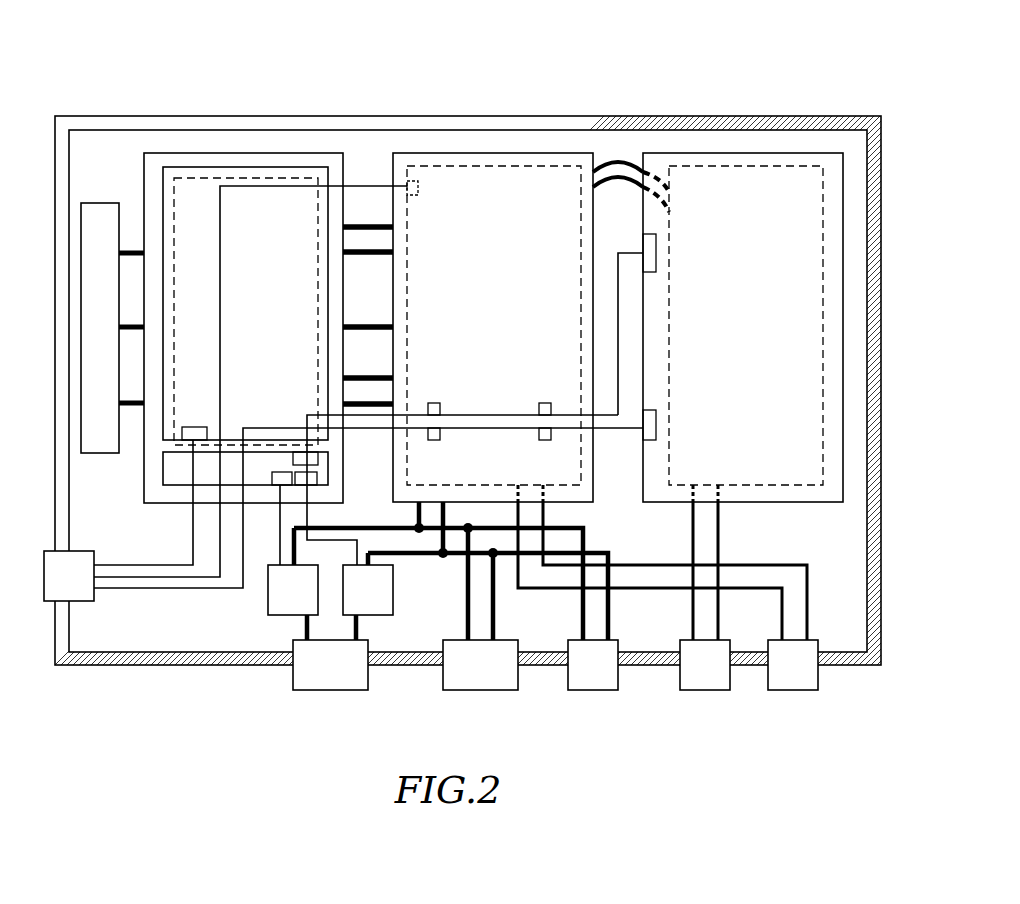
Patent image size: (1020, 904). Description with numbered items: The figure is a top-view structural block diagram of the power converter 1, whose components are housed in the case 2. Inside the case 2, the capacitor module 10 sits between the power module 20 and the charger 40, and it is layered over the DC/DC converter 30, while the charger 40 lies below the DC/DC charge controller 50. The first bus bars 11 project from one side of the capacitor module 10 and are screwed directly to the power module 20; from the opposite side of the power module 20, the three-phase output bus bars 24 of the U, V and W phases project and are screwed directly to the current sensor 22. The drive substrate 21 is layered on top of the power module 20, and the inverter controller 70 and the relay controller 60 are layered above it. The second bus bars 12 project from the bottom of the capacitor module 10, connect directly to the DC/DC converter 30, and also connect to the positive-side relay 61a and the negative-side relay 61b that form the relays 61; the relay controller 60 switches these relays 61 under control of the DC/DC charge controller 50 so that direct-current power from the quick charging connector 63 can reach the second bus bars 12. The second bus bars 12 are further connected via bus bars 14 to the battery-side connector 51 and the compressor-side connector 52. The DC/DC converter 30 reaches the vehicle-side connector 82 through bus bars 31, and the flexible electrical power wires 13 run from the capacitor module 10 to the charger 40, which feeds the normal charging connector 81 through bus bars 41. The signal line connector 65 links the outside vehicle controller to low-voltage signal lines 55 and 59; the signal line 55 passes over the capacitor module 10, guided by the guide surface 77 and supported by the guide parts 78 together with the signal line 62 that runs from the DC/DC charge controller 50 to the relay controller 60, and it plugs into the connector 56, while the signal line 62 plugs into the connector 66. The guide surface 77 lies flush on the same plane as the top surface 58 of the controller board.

The power converter 1 is at (768, 88).
The case 2 is at (852, 116).
The capacitor module 10 is at (545, 153).
The first bus bars 11 is at (364, 215).
The second bus bars 12 is at (408, 517).
The electrical power wires 13 is at (617, 160).
The bus bars 14 is at (593, 543).
The power module 20 is at (318, 153).
The drive substrate 21 is at (197, 178).
The current sensor 22 is at (100, 203).
The three-phase output bus bars 24 is at (128, 228).
The DC/DC converter 30 is at (483, 166).
The bus bars 31 is at (818, 590).
The charger 40 is at (718, 166).
The bus bars 41 is at (733, 541).
The DC/DC charge controller 50 is at (783, 153).
The battery-side connector 51 is at (483, 690).
The compressor-side connector 52 is at (595, 690).
The signal line 55 is at (495, 425).
The connector 56 is at (657, 422).
The top surface 58 is at (750, 322).
The signal line 59 is at (195, 525).
The relay controller 60 is at (172, 472).
The relays 61 is at (333, 634).
The positive-side relay 61a is at (276, 592).
The negative-side relay 61b is at (377, 592).
The signal line 62 is at (618, 280).
The quick charging connector 63 is at (330, 690).
The signal line connector 65 is at (97, 598).
The connector 66 is at (657, 243).
The inverter controller 70 is at (250, 167).
The guide surface 77 is at (480, 268).
The guide parts 78 is at (433, 402).
The normal charging connector 81 is at (707, 690).
The vehicle-side connector 82 is at (795, 690).